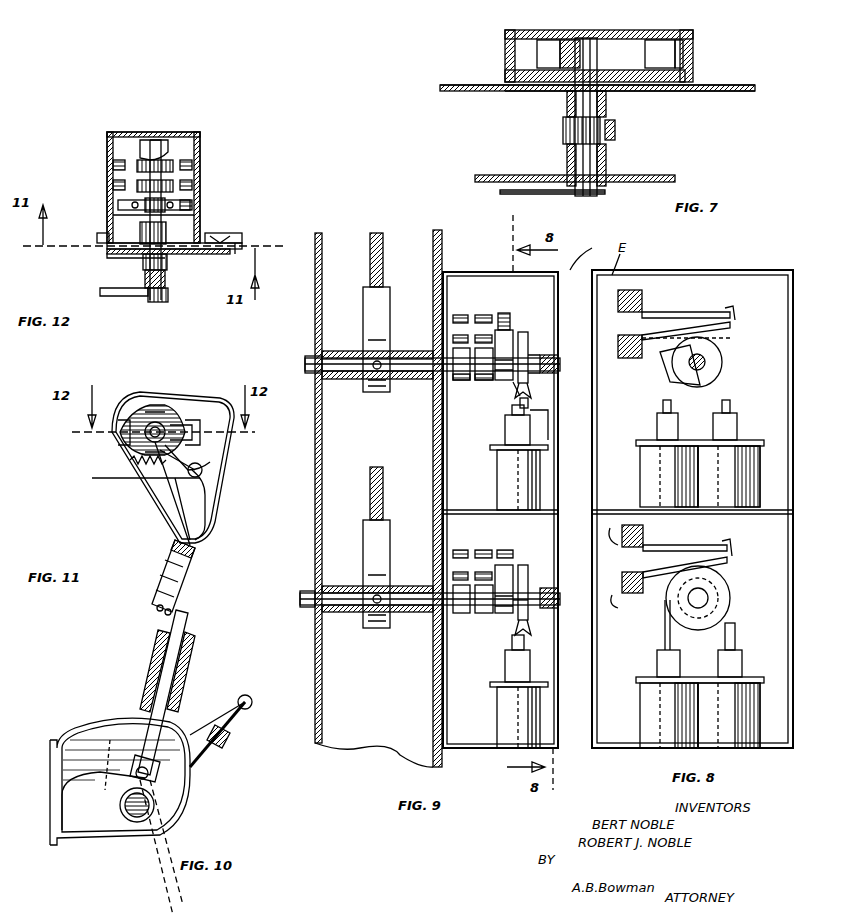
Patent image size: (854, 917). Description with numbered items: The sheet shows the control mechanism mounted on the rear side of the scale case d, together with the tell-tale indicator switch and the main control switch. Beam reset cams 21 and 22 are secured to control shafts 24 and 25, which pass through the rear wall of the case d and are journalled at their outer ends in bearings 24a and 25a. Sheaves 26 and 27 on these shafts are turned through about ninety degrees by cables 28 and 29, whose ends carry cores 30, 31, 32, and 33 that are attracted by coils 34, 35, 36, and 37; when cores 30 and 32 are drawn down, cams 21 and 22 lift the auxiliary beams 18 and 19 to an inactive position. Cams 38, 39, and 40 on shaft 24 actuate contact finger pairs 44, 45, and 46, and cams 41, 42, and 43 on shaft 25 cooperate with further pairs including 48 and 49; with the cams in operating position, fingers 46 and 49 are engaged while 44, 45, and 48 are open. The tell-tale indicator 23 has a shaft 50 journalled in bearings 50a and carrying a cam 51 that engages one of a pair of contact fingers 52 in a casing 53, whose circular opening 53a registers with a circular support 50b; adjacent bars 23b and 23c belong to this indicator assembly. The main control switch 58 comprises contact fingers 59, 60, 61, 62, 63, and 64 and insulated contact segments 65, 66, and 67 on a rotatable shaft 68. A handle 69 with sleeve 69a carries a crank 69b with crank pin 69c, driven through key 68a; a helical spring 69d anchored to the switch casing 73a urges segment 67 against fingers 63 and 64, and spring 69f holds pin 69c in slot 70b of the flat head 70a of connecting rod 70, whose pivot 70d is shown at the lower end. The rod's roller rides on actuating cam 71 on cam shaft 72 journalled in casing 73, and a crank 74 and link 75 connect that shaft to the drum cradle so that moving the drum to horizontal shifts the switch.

In FIG. 9, the auxiliary beam 18 is at (384, 248).
In FIG. 9, the auxiliary beam 19 is at (384, 478).
In FIG. 9, the beam reset cam 21 is at (386, 320).
In FIG. 9, the beam reset cam 22 is at (380, 548).
In FIG. 7, the tell-tale indicator 23 is at (482, 175).
In FIG. 8, the tell-tale indicator 23 is at (730, 612).
In FIG. 7, the bottom bar 23b is at (540, 194).
In FIG. 7, the bar end 23c is at (495, 184).
In FIG. 9, the control shaft 24 is at (410, 365).
In FIG. 8, the control shaft 24 is at (706, 363).
In FIG. 9, the bearing 24a is at (432, 372).
In FIG. 9, the control shaft 25 is at (420, 606).
In FIG. 8, the control shaft 25 is at (728, 592).
In FIG. 9, the bearing 25a is at (405, 590).
In FIG. 9, the sheave 26 is at (528, 345).
In FIG. 9, the sheave 27 is at (460, 550).
In FIG. 8, the sheave 27 is at (708, 598).
In FIG. 9, the cable 28 is at (515, 385).
In FIG. 9, the cable 29 is at (520, 612).
In FIG. 8, the core 30 is at (645, 450).
In FIG. 8, the core 31 is at (730, 414).
In FIG. 8, the core 32 is at (660, 688).
In FIG. 8, the core 33 is at (738, 640).
In FIG. 9, the coil 34 is at (498, 460).
In FIG. 8, the coil 34 is at (648, 472).
In FIG. 8, the coil 35 is at (750, 458).
In FIG. 9, the coil 36 is at (498, 700).
In FIG. 8, the coil 36 is at (648, 708).
In FIG. 8, the coil 37 is at (748, 715).
In FIG. 9, the cam 38 is at (460, 380).
In FIG. 9, the cam 39 is at (485, 382).
In FIG. 8, the cam 39 is at (668, 370).
In FIG. 9, the cam 40 is at (500, 382).
In FIG. 8, the cam 40 is at (720, 340).
In FIG. 9, the cam 41 is at (462, 613).
In FIG. 9, the cam 42 is at (484, 613).
In FIG. 8, the cam 42 is at (662, 605).
In FIG. 9, the cam 43 is at (504, 613).
In FIG. 9, the contact finger pair 44 is at (460, 315).
In FIG. 9, the contact finger pair 45 is at (484, 315).
In FIG. 9, the contact finger pair 46 is at (506, 313).
In FIG. 8, the contact finger pair 46 is at (705, 312).
In FIG. 9, the contact finger pair 48 is at (484, 550).
In FIG. 9, the contact finger pair 49 is at (506, 550).
In FIG. 8, the contact finger pair 49 is at (732, 548).
In FIG. 7, the shaft 50 is at (606, 170).
In FIG. 7, the bearing 50a is at (604, 112).
In FIG. 7, the circular support 50b is at (648, 100).
In FIG. 7, the cam 51 is at (600, 30).
In FIG. 7, the contact fingers 52 is at (672, 32).
In FIG. 7, the casing 53 is at (693, 56).
In FIG. 7, the circular opening 53a is at (505, 76).
In FIG. 12, the main control switch 58 is at (178, 142).
In FIG. 12, the contact finger 59 is at (113, 165).
In FIG. 12, the contact finger 60 is at (192, 163).
In FIG. 12, the contact finger 61 is at (113, 186).
In FIG. 12, the contact finger 62 is at (192, 184).
In FIG. 12, the contact finger 63 is at (118, 206).
In FIG. 11, the contact finger 63 is at (118, 440).
In FIG. 12, the contact finger 64 is at (192, 204).
In FIG. 11, the contact finger 64 is at (195, 425).
In FIG. 12, the contact segment 65 is at (140, 180).
In FIG. 12, the contact segment 66 is at (142, 170).
In FIG. 11, the contact segment 66 is at (153, 420).
In FIG. 12, the contact segment 67 is at (130, 216).
In FIG. 11, the contact segment 67 is at (118, 395).
In FIG. 12, the shaft 68 is at (112, 250).
In FIG. 11, the shaft 68 is at (162, 420).
In FIG. 12, the key 68a is at (143, 262).
In FIG. 11, the key 68a is at (178, 425).
In FIG. 12, the handle 69 is at (140, 293).
In FIG. 12, the sleeve portion 69a is at (165, 280).
In FIG. 11, the sleeve portion 69a is at (135, 410).
In FIG. 12, the crank member 69b is at (210, 240).
In FIG. 11, the crank member 69b is at (175, 468).
In FIG. 12, the crank pin 69c is at (242, 238).
In FIG. 11, the crank pin 69c is at (178, 478).
In FIG. 11, the helical spring 69d is at (130, 462).
In FIG. 12, the spring 69f is at (108, 255).
In FIG. 11, the spring 69f is at (112, 450).
In FIG. 11, the connecting rod 70 is at (190, 610).
In FIG. 10, the connecting rod 70 is at (180, 705).
In FIG. 11, the flat head portion 70a is at (210, 525).
In FIG. 11, the slot 70b is at (205, 472).
In FIG. 10, the rod pivot pin 70d is at (150, 775).
In FIG. 10, the actuating cam 71 is at (78, 820).
In FIG. 10, the cam shaft 72 is at (150, 810).
In FIG. 10, the casing 73 is at (108, 732).
In FIG. 11, the casing 73a is at (165, 512).
In FIG. 10, the crank 74 is at (242, 696).
In FIG. 10, the link 75 is at (240, 730).
In FIG. 9, the case d is at (326, 262).